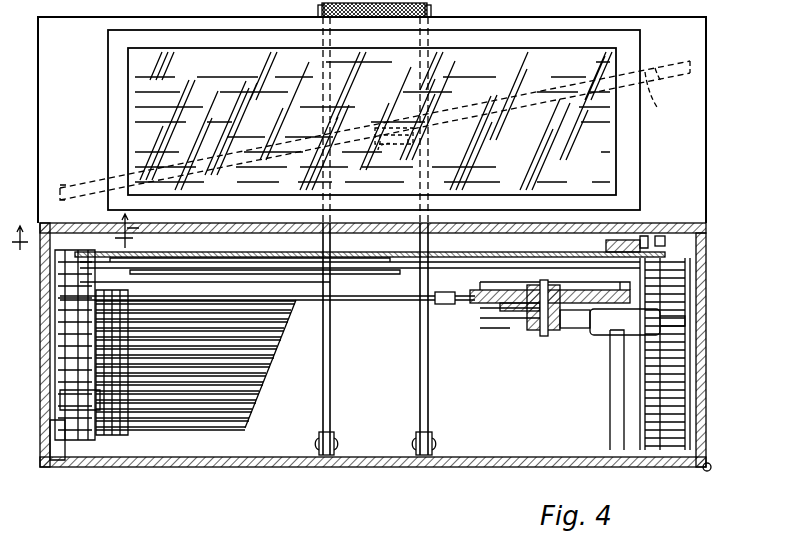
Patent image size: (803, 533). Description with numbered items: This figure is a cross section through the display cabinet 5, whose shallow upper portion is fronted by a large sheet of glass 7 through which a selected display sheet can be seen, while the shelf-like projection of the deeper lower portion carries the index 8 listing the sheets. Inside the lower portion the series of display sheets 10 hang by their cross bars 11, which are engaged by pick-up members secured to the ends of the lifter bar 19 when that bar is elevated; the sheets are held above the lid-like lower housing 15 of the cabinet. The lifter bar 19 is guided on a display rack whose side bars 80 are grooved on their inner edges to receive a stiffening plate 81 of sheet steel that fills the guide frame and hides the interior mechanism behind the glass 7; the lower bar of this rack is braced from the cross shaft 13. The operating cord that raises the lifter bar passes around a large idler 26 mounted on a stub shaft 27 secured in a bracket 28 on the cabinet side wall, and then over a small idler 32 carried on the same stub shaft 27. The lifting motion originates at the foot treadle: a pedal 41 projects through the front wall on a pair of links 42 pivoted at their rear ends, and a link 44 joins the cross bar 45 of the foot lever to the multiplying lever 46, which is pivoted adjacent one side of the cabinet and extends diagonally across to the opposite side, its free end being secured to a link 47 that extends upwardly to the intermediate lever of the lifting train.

The cabinet 5 is at (708, 416).
The sheet of glass 7 is at (598, 228).
The index 8 is at (131, 103).
The slats 10 is at (242, 408).
The cross bars 11 is at (118, 418).
The cross shaft 13 is at (79, 241).
The lid 15 is at (612, 16).
The lifter bar 19 is at (278, 266).
The large idler 26 is at (496, 304).
The stub shaft 27 is at (548, 336).
The bracket 28 is at (680, 300).
The small idler 32 is at (522, 332).
The pedal 41 is at (431, 10).
The links 42 is at (322, 406).
The link 44 is at (384, 124).
The cross bar 45 is at (391, 150).
The multiplying lever 46 is at (667, 93).
The link 47 is at (72, 202).
The side bars 80 is at (630, 252).
The stiffening plate 81 is at (590, 246).